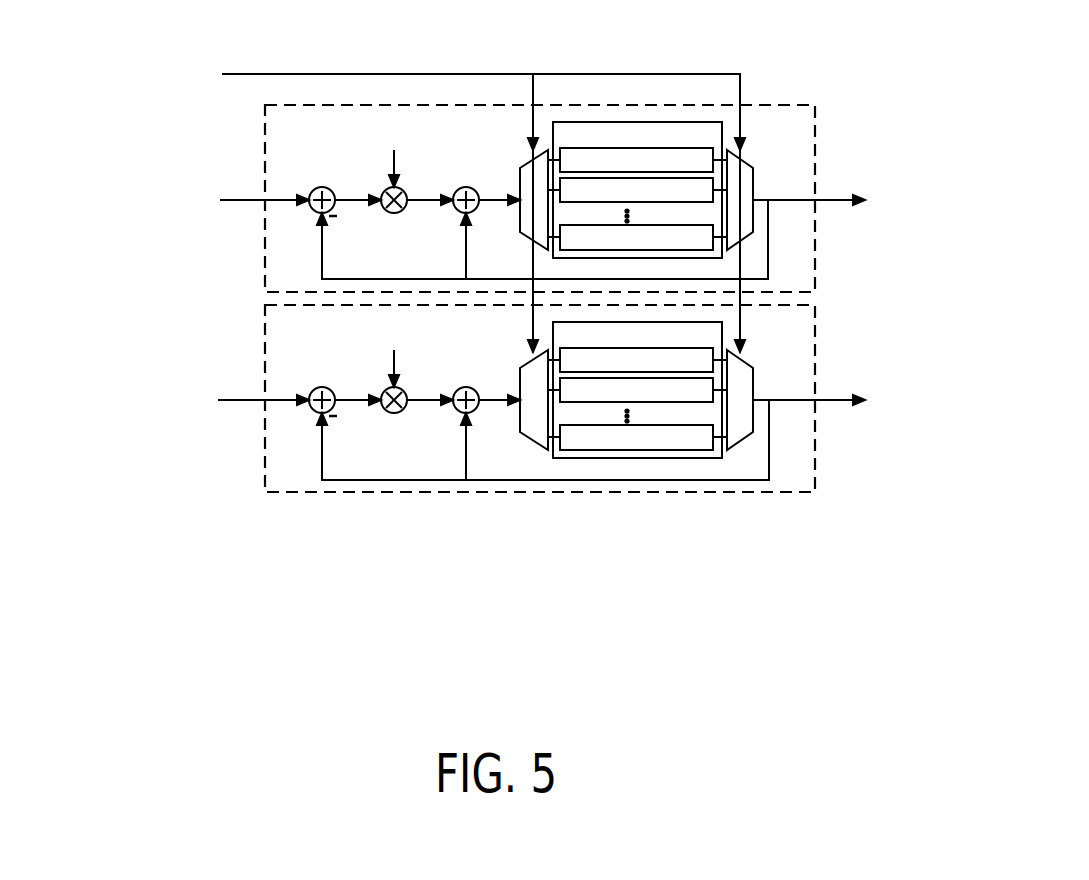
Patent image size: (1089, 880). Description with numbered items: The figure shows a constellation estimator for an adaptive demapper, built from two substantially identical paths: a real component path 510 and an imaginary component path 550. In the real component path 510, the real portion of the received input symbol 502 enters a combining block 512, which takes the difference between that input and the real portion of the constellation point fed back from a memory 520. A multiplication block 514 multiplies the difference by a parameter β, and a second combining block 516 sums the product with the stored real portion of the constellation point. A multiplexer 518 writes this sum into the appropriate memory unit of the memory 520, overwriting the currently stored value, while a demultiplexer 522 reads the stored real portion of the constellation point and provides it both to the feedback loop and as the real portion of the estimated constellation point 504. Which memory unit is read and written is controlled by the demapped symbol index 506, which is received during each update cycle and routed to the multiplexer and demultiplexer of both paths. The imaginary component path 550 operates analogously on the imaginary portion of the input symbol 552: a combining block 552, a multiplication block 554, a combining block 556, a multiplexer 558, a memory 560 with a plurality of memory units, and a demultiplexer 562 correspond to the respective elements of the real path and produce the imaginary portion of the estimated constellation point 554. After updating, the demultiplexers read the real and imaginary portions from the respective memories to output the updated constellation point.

The real part of received symbol input 502 is at (173, 215).
The real part of estimated constellation point output 504 is at (988, 236).
The demapped symbol index 506 is at (150, 93).
The real component path 510 is at (322, 131).
The combining block 512 is at (324, 187).
The multiplication block 514 is at (393, 213).
The combining block 516 is at (468, 187).
The multiplexer 518 is at (520, 236).
The memory 520 is at (652, 143).
The demultiplexer 522 is at (748, 166).
The imaginary component path 550 is at (323, 331).
The combining block 552 is at (337, 364).
The multiplication block 554 is at (393, 413).
The combining block 556 is at (468, 387).
The multiplexer 558 is at (520, 436).
The memory 560 is at (652, 343).
The demultiplexer 562 is at (748, 366).